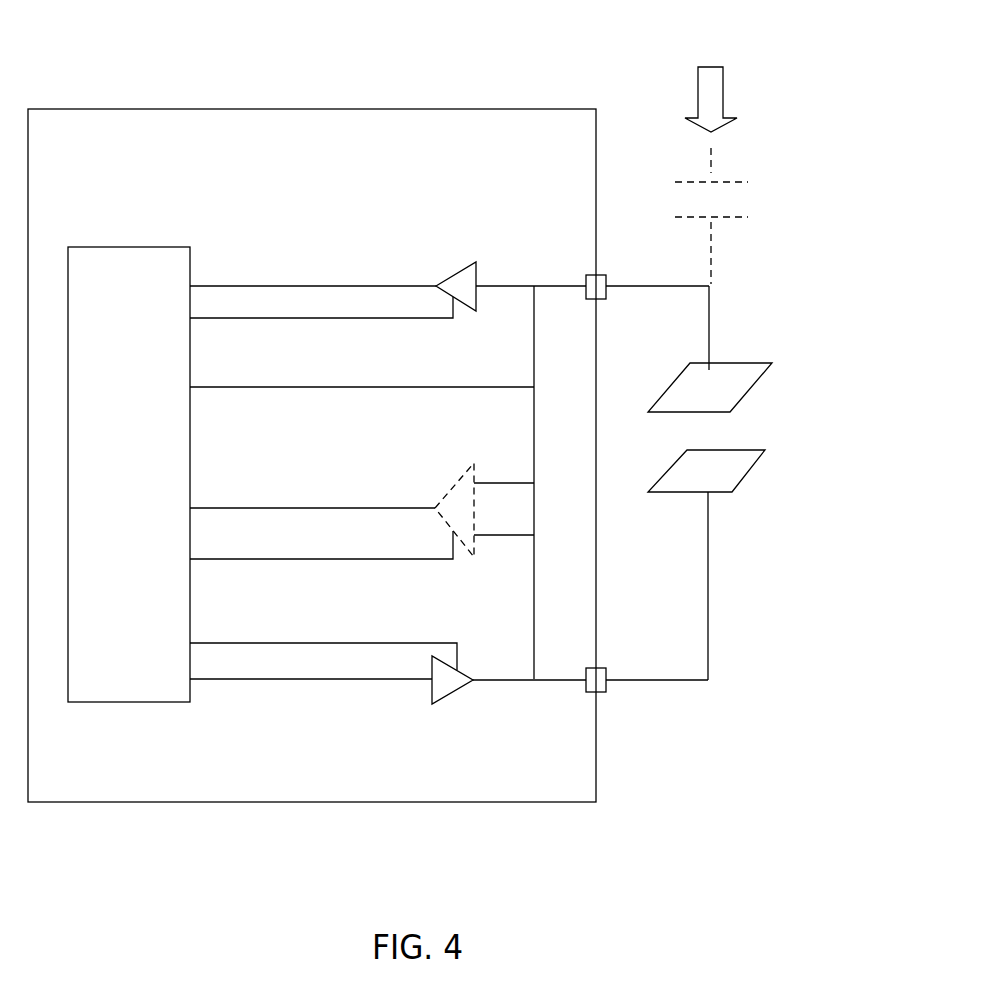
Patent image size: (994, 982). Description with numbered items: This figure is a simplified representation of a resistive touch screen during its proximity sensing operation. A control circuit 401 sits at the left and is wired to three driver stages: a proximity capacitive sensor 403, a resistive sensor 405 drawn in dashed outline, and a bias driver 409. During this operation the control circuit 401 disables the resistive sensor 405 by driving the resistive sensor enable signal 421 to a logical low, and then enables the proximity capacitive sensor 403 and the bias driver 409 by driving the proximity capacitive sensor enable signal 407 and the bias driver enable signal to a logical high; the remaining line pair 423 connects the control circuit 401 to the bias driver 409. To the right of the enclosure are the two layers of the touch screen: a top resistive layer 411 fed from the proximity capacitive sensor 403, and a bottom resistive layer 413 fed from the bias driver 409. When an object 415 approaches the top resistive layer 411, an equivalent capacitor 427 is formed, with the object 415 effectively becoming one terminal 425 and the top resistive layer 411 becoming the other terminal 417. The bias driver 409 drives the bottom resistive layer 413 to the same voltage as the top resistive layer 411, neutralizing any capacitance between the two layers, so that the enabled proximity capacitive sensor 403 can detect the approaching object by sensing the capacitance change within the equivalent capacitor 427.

The control circuit 401 is at (150, 245).
The proximity capacitive sensor 403 is at (458, 268).
The resistive sensor 405 is at (460, 476).
The proximity capacitive sensor enable signal 407 is at (322, 320).
The bias driver 409 is at (450, 700).
The top resistive layer 411 is at (693, 383).
The bottom resistive layer 413 is at (683, 498).
The object 415 is at (740, 99).
The terminal 417 is at (746, 222).
The resistive sensor enable signal 421 is at (350, 563).
The lines to receiver amplifier 423 is at (374, 641).
The terminal 425 is at (750, 181).
The equivalent capacitor 427 is at (765, 200).